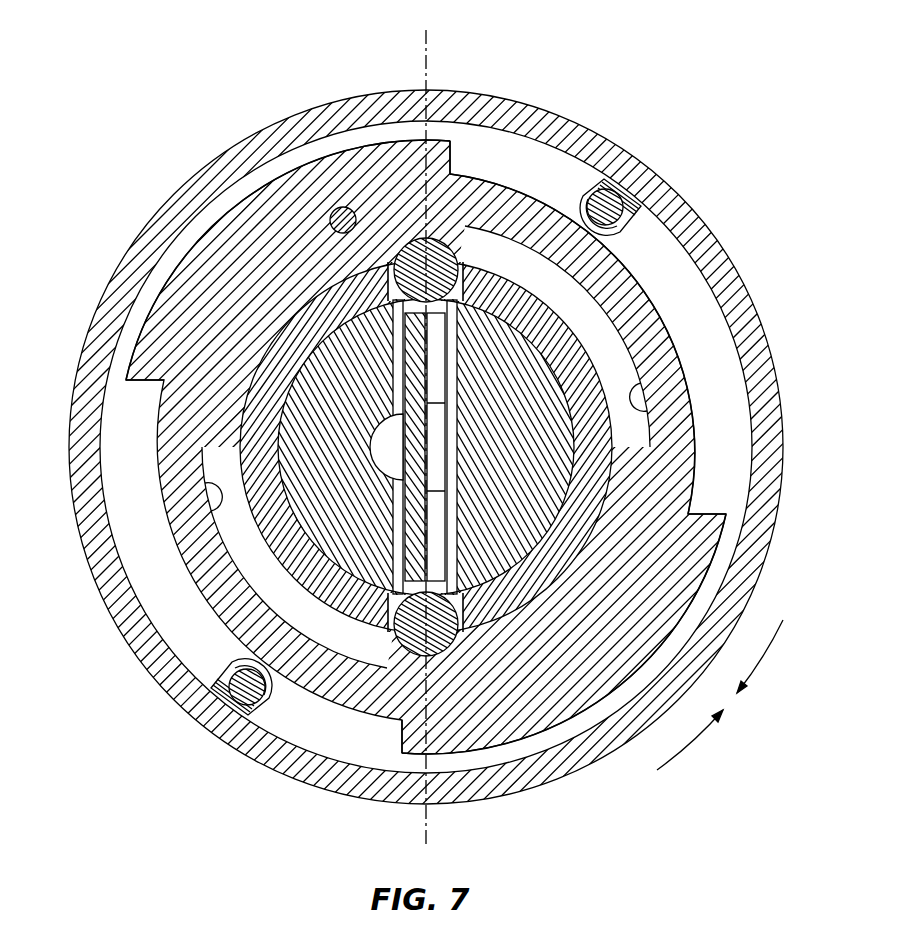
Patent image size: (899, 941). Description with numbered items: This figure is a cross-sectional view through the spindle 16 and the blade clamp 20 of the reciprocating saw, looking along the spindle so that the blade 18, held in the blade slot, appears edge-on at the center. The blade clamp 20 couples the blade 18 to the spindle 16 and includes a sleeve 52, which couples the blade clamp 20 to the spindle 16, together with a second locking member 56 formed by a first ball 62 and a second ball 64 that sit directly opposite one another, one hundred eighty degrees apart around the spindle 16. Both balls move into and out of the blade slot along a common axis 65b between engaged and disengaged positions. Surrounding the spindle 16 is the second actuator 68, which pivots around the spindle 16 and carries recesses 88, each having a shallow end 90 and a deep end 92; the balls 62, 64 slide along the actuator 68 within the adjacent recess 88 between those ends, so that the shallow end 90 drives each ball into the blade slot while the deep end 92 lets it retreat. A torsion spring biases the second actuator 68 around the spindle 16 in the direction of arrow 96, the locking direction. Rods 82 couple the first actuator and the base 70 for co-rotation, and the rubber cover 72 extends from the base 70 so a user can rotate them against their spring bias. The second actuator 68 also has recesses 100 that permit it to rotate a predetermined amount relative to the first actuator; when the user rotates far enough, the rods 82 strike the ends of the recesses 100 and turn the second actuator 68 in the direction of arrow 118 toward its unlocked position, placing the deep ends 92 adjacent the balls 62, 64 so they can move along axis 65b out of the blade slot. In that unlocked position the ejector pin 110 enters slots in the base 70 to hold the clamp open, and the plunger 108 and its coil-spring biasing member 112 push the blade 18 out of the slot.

The blade clamp 20 is at (637, 73).
The cover 72 is at (278, 124).
The second actuator 68 is at (222, 240).
The base 70 is at (300, 160).
The second ball 64 is at (387, 638).
The first ball 62 is at (502, 260).
The recesses 100 is at (472, 178).
The deep end 92 is at (632, 378).
The plunger 108 is at (548, 318).
The pin 110 is at (240, 486).
The sleeve 52 is at (265, 365).
The spindle 16 is at (506, 478).
The blade 18 is at (323, 345).
The biasing member 112 is at (372, 450).
The second locking member 56 is at (414, 238).
The recesses 88 is at (466, 240).
The shallow end 90 is at (335, 266).
The rods 82 is at (612, 190).
The axis 65b is at (425, 820).
The arrow 96 is at (763, 657).
The arrow 118 is at (683, 750).